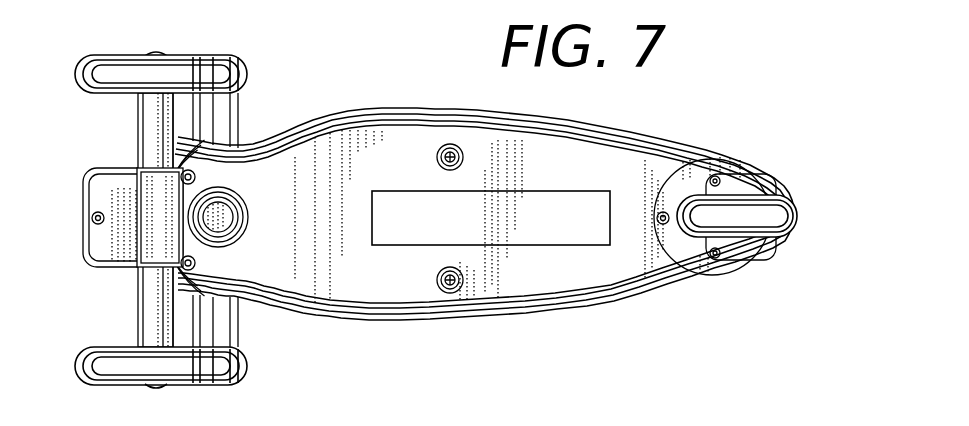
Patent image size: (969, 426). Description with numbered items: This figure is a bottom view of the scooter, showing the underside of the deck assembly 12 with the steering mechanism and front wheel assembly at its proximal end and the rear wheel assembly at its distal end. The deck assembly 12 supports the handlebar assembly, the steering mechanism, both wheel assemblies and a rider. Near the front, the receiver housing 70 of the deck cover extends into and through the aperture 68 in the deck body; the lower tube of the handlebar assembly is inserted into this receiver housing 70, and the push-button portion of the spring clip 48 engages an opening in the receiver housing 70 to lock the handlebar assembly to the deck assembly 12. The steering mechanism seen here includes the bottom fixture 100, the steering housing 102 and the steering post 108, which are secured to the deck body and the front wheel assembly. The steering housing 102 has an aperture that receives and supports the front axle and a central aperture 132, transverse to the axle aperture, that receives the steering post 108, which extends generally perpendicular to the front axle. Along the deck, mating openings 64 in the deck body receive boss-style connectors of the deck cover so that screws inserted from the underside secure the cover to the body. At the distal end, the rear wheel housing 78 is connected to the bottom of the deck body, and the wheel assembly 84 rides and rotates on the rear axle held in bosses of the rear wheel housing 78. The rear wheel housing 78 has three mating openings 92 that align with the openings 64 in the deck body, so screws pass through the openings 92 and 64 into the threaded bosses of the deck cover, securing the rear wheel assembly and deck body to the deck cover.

The deck assembly 12 is at (541, 272).
The spring clip 48 is at (196, 218).
The mating openings 64 is at (92, 222).
The aperture 68 is at (238, 247).
The receiver housing 70 is at (247, 205).
The rear wheel housing 78 is at (695, 180).
The wheel assembly 84 is at (793, 212).
The mating openings 92 is at (720, 257).
The bottom fixture 100 is at (103, 197).
The steering housing 102 is at (152, 188).
The steering post 108 is at (110, 262).
The central aperture 132 is at (157, 222).